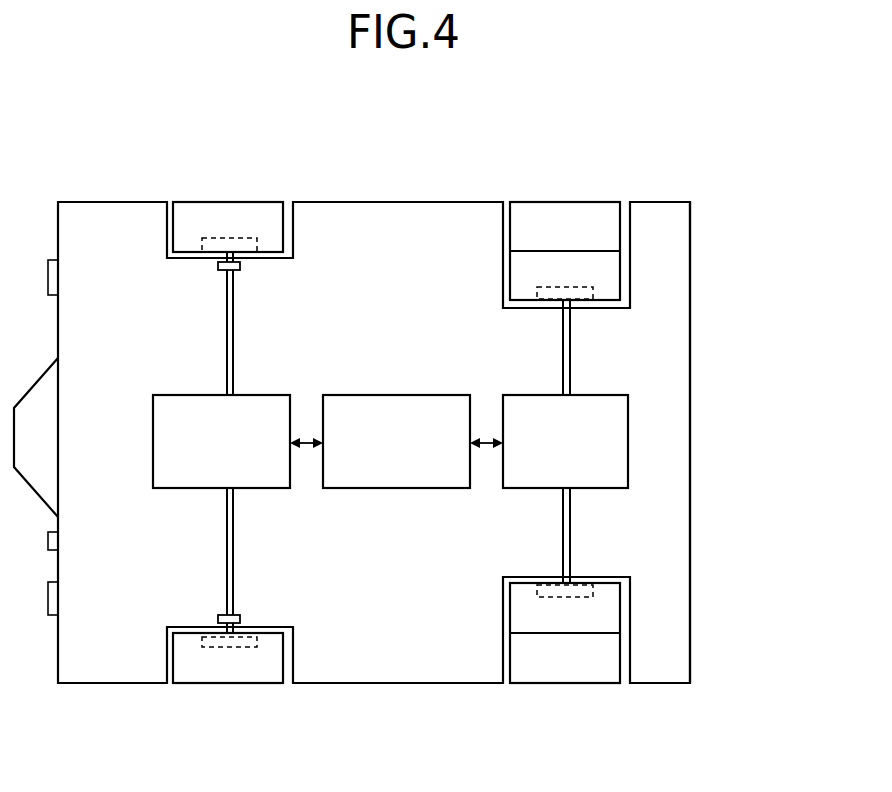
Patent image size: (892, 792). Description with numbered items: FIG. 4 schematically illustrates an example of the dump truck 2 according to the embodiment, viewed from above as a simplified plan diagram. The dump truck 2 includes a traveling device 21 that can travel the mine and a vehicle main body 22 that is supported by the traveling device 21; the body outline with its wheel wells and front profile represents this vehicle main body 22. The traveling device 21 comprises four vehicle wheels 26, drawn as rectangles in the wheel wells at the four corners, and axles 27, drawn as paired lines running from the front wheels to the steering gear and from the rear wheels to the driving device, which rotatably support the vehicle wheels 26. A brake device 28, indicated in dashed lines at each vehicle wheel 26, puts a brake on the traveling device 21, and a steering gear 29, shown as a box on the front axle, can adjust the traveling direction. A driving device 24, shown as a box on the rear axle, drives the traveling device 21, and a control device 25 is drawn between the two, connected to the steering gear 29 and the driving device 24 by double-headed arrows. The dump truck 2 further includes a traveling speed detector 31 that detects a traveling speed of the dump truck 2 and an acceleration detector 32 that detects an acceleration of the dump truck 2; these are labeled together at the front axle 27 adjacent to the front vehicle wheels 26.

The dump truck 2 is at (679, 177).
The traveling device 21 is at (156, 193).
The vehicle main body 22 is at (700, 245).
The driving device 24 is at (600, 395).
The control device 25 is at (433, 395).
The vehicle wheels 26 is at (185, 201).
The axles 27 is at (227, 535).
The brake device 28 is at (397, 446).
The steering gear 29 is at (263, 395).
The traveling speed detector 31 is at (218, 266).
The acceleration detector 32 is at (229, 442).